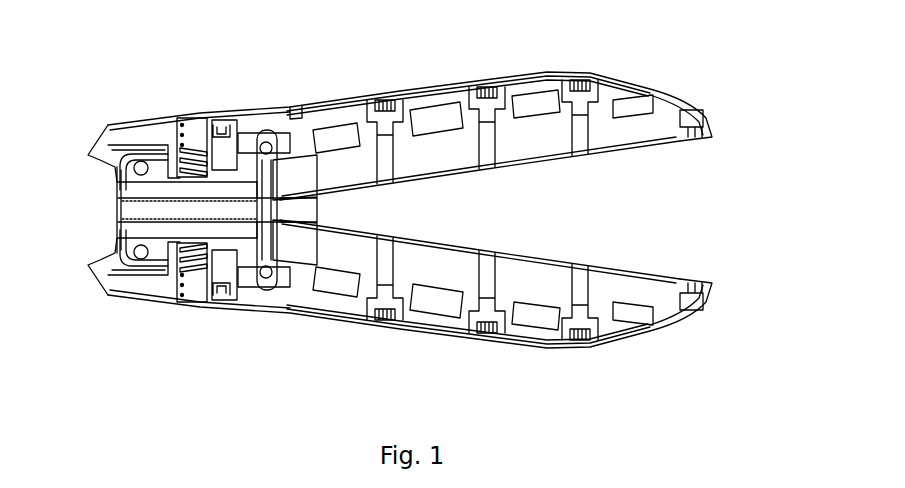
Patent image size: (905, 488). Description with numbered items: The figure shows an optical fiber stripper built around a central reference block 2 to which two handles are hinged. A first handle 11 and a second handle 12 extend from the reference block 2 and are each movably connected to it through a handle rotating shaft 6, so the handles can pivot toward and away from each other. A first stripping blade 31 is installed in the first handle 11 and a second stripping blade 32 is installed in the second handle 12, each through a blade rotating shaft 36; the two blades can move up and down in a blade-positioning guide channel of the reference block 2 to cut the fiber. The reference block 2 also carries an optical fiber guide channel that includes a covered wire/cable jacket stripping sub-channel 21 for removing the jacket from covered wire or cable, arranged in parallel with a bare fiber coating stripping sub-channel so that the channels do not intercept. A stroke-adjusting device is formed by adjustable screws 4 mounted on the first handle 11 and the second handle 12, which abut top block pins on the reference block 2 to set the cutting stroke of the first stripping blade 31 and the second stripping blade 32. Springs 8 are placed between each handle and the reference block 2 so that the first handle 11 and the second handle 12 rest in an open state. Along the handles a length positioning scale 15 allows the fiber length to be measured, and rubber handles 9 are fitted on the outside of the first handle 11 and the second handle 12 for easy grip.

The reference block 2 is at (140, 228).
The adjustable screws 4 is at (224, 335).
The handle rotating shaft 6 is at (141, 338).
The springs 8 is at (196, 150).
The rubber handles 9 is at (528, 392).
The first handle 11 is at (662, 112).
The second handle 12 is at (667, 302).
The length positioning scale 15 is at (640, 272).
The covered wire/cable jacket stripping sub-channel 21 is at (133, 208).
The first stripping blade 31 is at (302, 108).
The second stripping blade 32 is at (266, 302).
The blade rotating shaft 36 is at (268, 143).